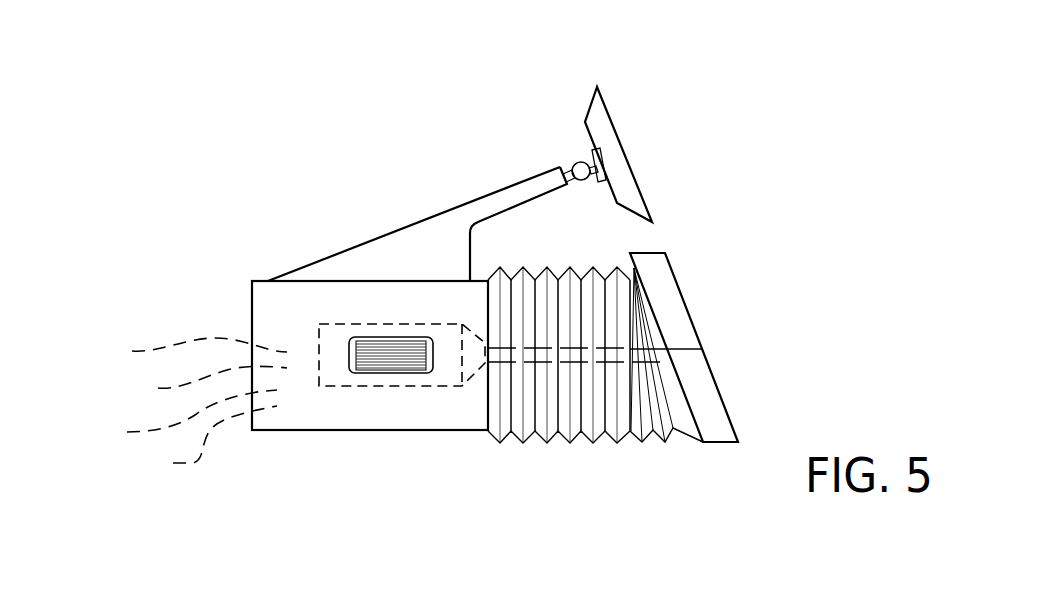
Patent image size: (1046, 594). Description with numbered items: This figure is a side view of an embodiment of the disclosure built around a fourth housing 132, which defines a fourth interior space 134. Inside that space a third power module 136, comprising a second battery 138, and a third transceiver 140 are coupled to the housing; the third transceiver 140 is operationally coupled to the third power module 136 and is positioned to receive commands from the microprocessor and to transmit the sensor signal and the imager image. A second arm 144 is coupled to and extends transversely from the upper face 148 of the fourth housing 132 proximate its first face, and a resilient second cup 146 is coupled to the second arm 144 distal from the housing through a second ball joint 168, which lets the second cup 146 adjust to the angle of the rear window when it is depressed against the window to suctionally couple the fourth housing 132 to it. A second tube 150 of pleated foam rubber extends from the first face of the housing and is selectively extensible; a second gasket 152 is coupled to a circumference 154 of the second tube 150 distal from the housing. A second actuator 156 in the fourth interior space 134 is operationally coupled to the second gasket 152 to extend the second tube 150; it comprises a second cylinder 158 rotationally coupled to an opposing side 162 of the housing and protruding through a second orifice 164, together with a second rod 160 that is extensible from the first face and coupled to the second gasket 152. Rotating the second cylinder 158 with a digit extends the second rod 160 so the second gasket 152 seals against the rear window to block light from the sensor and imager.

The fourth housing 132 is at (252, 315).
The fourth interior space 134 is at (177, 346).
The third power module 136 is at (191, 385).
The second battery 138 is at (170, 418).
The third transceiver 140 is at (192, 444).
The second arm 144 is at (480, 207).
The second cup 146 is at (611, 133).
The upper face 148 is at (397, 282).
The second tube 150 is at (627, 403).
The second gasket 152 is at (712, 418).
The circumference 154 is at (690, 402).
The second actuator 156 is at (515, 353).
The second cylinder 158 is at (383, 360).
The second rod 160 is at (565, 355).
The opposing side 162 is at (297, 300).
The second orifice 164 is at (350, 355).
The second ball joint 168 is at (579, 158).